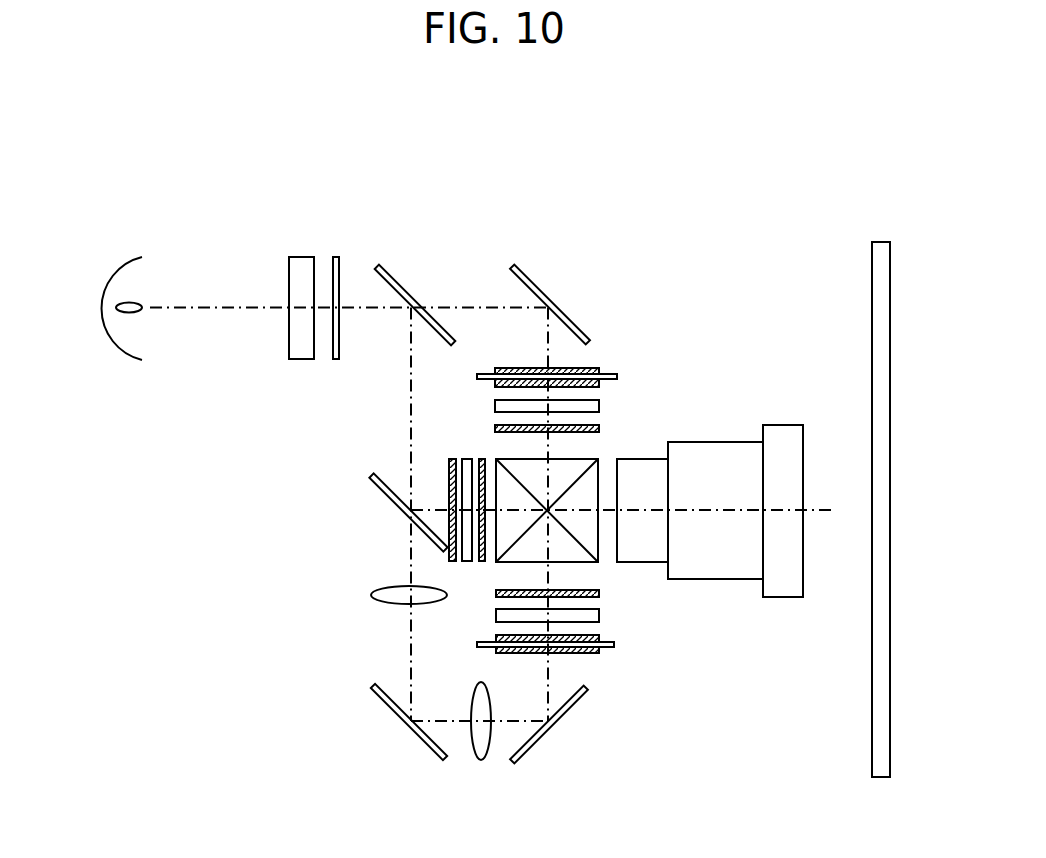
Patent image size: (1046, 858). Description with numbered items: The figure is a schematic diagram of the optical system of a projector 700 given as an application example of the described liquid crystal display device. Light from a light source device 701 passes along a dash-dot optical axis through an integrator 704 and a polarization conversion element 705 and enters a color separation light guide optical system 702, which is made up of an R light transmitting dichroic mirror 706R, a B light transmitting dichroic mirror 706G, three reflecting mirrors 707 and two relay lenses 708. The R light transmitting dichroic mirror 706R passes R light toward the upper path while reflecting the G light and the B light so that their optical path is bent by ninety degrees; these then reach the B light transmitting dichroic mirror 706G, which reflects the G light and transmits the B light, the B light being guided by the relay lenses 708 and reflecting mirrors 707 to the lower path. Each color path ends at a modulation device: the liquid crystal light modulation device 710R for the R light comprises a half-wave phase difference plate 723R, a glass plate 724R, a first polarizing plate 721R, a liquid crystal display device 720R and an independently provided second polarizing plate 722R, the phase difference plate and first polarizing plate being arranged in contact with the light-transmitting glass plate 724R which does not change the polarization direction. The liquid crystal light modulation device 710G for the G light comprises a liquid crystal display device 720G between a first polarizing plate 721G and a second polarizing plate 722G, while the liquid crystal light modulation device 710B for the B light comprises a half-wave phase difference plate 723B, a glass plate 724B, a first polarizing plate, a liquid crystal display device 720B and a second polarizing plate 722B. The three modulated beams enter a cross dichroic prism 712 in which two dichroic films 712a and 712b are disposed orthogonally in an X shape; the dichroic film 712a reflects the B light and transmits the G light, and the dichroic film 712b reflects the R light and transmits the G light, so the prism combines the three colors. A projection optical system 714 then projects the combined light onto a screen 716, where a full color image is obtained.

The projector 700 is at (673, 205).
The light source device 701 is at (117, 357).
The color separation light guide optical system 702 is at (518, 218).
The integrator 704 is at (298, 257).
The polarization conversion element 705 is at (336, 257).
The R light transmitting dichroic mirror 706R is at (400, 283).
The B light transmitting dichroic mirror 706G is at (382, 492).
The reflecting mirror 707 is at (540, 293).
The relay lens 708 is at (372, 594).
The liquid crystal light modulation device for the R light 710R is at (649, 479).
The liquid crystal light modulation device for the G light 710G is at (345, 579).
The liquid crystal light modulation device for the B light 710B is at (649, 672).
The cross dichroic prism 712 is at (572, 563).
The dichroic film 712a is at (578, 468).
The dichroic film 712b is at (498, 461).
The projection optical system 714 is at (783, 590).
The screen 716 is at (877, 242).
The liquid crystal display device 720R is at (600, 406).
The liquid crystal display device 720G is at (467, 563).
The liquid crystal display device 720B is at (600, 616).
The first polarizing plate 721R is at (600, 384).
The first polarizing plate 721G is at (452, 563).
The second polarizing plate 722R is at (600, 428).
The second polarizing plate 722G is at (482, 563).
The second polarizing plate 722B is at (600, 594).
The λ/2 phase difference plate 723R is at (601, 369).
The λ/2 phase difference plate 723B is at (600, 651).
The glass plate 724R is at (617, 377).
The glass plate 724B is at (614, 645).